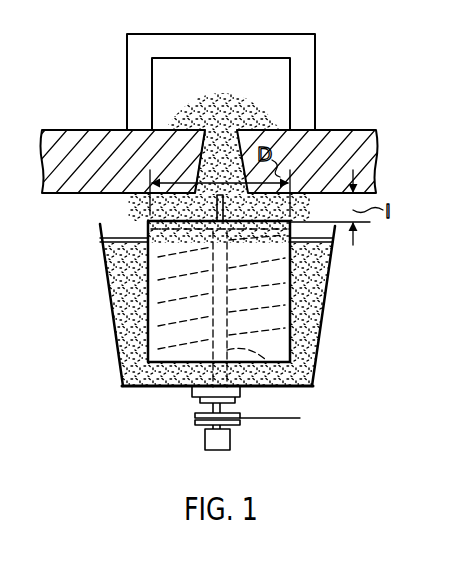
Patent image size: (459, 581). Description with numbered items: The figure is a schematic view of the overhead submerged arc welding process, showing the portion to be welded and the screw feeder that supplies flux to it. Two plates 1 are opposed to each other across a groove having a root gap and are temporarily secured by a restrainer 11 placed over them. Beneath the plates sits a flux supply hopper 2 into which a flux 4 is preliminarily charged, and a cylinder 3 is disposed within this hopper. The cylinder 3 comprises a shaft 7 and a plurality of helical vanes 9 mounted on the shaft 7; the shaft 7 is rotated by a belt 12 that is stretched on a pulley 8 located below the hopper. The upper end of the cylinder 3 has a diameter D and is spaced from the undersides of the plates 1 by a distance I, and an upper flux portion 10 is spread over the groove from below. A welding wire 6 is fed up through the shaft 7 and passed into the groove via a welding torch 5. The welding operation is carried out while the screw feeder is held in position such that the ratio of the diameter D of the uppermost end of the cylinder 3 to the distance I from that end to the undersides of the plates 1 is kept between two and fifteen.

The plate 1 is at (63, 130).
The flux supply hopper 2 is at (326, 290).
The cylinder 3 is at (292, 323).
The flux 4 is at (203, 185).
The welding torch 5 is at (226, 206).
The welding wire 6 is at (196, 177).
The shaft 7 is at (305, 380).
The pulley 8 is at (203, 425).
The helical vanes 9 is at (176, 392).
The upper flux portion 10 is at (235, 107).
The restrainer 11 is at (308, 65).
The belt 12 is at (263, 418).